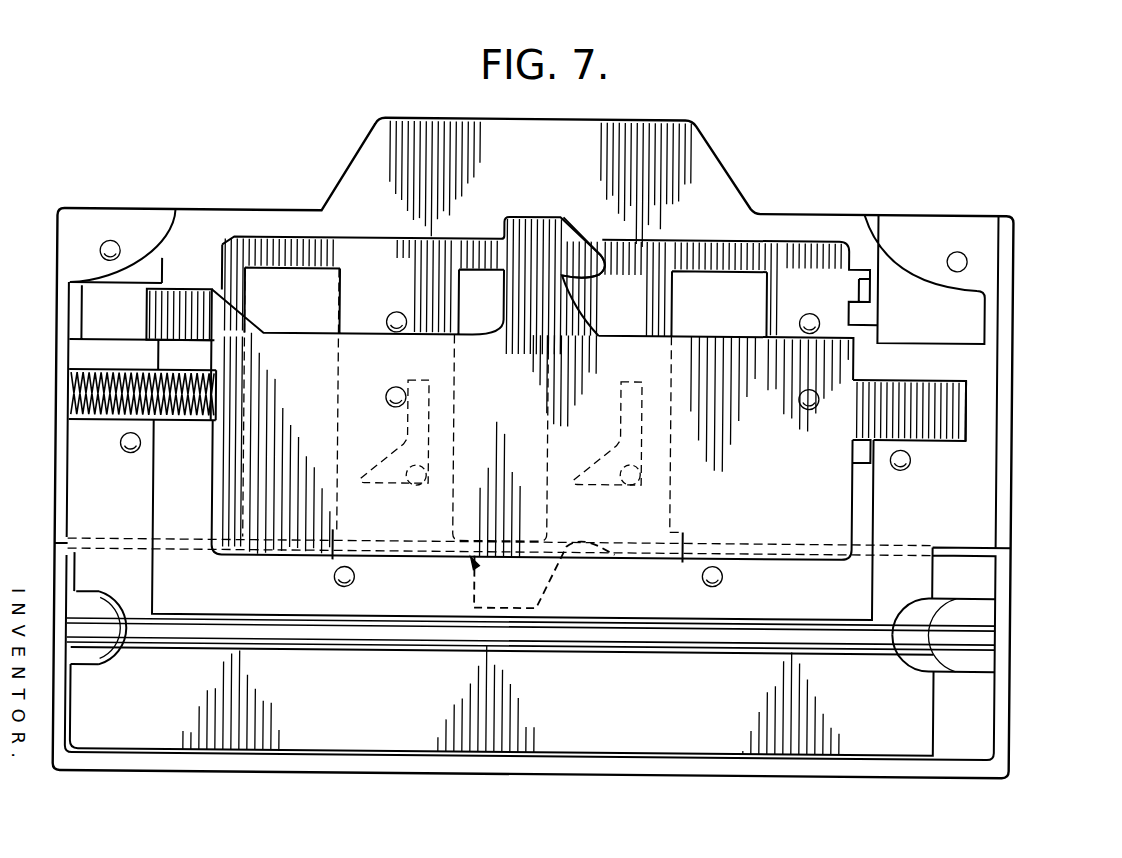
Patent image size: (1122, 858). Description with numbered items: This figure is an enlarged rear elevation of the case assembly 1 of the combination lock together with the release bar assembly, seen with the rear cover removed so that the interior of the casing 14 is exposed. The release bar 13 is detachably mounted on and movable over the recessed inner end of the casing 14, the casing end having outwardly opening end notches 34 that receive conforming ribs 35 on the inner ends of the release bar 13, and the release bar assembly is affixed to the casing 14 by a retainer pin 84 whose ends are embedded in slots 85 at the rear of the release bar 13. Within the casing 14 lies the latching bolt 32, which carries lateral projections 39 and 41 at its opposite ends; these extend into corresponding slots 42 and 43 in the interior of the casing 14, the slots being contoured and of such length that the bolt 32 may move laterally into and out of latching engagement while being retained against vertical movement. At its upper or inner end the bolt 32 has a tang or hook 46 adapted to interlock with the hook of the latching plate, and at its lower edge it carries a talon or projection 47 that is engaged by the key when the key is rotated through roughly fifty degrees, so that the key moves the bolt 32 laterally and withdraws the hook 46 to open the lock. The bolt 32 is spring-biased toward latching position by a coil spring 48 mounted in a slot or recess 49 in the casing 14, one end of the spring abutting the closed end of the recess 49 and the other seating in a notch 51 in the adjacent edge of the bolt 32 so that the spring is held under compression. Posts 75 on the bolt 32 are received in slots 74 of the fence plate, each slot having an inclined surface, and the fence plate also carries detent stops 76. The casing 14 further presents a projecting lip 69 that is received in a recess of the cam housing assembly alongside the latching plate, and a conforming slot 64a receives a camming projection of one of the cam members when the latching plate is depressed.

The case assembly 1 is at (1016, 311).
The release bar 13 is at (1011, 580).
The casing 14 is at (1012, 361).
The bolt 32 is at (574, 206).
The end notches 34 is at (113, 657).
The ribs 35 is at (98, 603).
The lateral projection 39 is at (185, 295).
The lateral projection 41 is at (950, 400).
The slot 42 is at (95, 318).
The slot 43 is at (967, 421).
The tang or hook 46 is at (588, 269).
The talon or projection 47 is at (548, 600).
The coil spring 48 is at (98, 420).
The slot or recess 49 is at (147, 420).
The notch 51 is at (220, 397).
The conforming slot 64a is at (907, 271).
The projecting lip 69 is at (692, 150).
The slot 74 is at (388, 485).
The post 75 is at (420, 487).
The detent stops 76 is at (391, 311).
The retainer pin 84 is at (655, 642).
The slots 85 is at (77, 612).